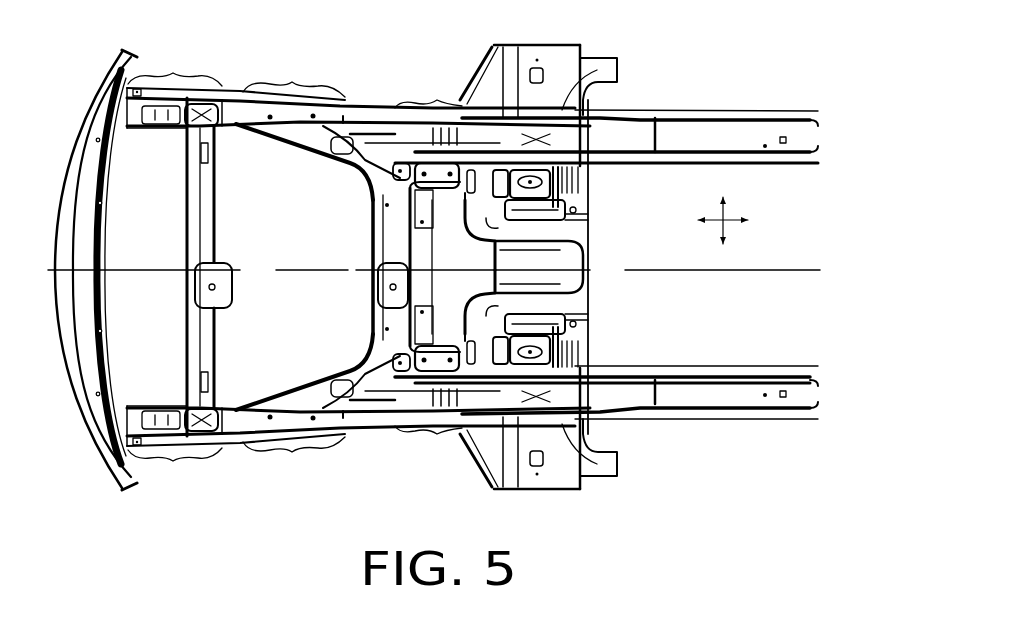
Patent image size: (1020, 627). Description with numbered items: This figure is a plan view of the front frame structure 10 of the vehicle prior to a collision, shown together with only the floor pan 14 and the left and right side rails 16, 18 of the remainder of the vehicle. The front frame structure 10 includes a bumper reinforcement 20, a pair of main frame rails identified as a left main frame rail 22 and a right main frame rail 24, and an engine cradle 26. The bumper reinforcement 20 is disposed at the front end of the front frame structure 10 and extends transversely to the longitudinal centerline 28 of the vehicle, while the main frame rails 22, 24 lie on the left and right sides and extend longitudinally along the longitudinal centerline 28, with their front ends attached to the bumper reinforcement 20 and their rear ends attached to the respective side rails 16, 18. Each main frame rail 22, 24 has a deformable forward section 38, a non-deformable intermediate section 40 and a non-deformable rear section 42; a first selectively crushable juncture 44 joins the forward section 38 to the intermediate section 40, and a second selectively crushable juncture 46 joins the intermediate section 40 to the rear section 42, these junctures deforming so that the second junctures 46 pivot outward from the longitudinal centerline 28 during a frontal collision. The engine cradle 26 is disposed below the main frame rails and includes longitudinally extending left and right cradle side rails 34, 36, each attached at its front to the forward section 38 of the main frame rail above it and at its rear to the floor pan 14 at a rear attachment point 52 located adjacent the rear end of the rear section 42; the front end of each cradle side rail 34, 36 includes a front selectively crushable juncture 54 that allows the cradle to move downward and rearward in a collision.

The front frame structure 10 is at (328, 64).
The floor pan 14 is at (570, 243).
The left side rail 16 is at (703, 393).
The right side rail 18 is at (697, 145).
The bumper reinforcement 20 is at (101, 214).
The left main frame rail 22 is at (152, 402).
The right main frame rail 24 is at (150, 133).
The engine cradle 26 is at (372, 216).
The longitudinal centerline 28 is at (350, 272).
The left engine cradle side rail 34 is at (296, 391).
The right engine cradle side rail 36 is at (283, 143).
The deformable forward section 38 is at (173, 73).
The non-deformable intermediate section 40 is at (290, 83).
The non-deformable rear section 42 is at (431, 104).
The first selectively crushable juncture 44 is at (226, 98).
The second selectively crushable juncture 46 is at (363, 107).
The rear attachment point 52 is at (553, 178).
The front selectively crushable juncture 54 is at (213, 268).